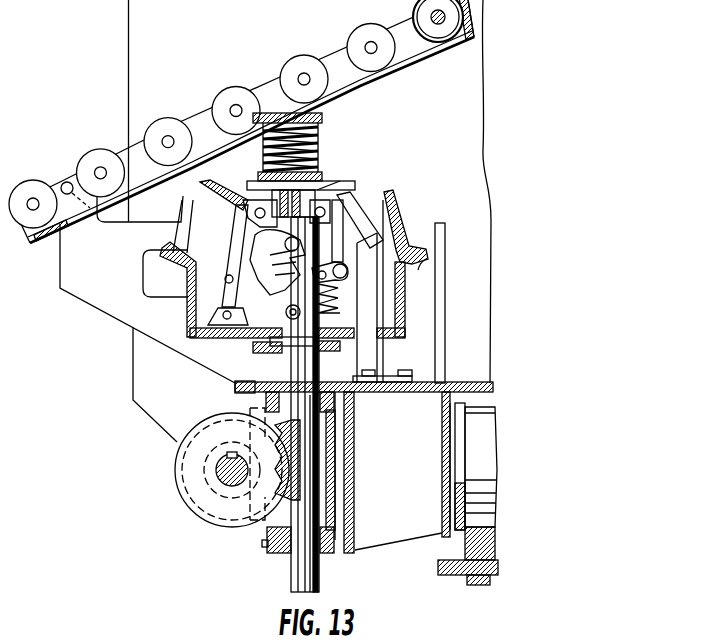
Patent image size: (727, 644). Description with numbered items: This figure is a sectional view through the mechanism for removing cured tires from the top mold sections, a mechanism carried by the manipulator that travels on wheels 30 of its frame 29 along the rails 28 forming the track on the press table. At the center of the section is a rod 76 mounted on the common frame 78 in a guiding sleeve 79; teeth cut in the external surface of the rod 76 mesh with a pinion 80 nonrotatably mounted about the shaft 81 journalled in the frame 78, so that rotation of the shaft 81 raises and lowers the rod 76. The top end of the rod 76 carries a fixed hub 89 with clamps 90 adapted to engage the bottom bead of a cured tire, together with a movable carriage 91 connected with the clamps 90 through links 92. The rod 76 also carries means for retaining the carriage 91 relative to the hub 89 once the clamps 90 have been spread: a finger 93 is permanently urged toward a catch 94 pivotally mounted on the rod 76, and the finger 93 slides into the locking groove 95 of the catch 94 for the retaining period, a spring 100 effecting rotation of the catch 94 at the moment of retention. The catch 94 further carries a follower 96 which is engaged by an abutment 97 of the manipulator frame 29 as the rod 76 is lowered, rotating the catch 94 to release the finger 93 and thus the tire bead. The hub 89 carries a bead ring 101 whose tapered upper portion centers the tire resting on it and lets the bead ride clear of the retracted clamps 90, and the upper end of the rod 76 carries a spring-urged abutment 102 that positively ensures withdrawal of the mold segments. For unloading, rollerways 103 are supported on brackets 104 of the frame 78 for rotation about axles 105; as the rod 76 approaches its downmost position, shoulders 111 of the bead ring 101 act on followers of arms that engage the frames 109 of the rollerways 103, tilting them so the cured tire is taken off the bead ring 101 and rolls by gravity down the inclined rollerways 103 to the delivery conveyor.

The rails 28 is at (499, 543).
The frame 29 is at (136, 44).
The wheels 30 is at (481, 469).
The rod 76 is at (320, 570).
The frame 78 is at (356, 488).
The guiding sleeves 79 is at (341, 406).
The pinion 80 is at (211, 404).
The shaft 81 is at (220, 472).
The hub 89 is at (233, 338).
The clamps 90 is at (201, 189).
The carriage 91 is at (340, 181).
The links 92 is at (232, 262).
The finger 93 is at (275, 235).
The catch 94 is at (257, 302).
The locking groove 95 is at (280, 252).
The follower 96 is at (348, 282).
The abutment 97 is at (408, 238).
The spring 100 is at (353, 308).
The bead ring 101 is at (156, 284).
The spring-urged abutment 102 is at (323, 118).
The rollerways 103 is at (99, 153).
The brackets 104 is at (62, 271).
The axles 105 is at (65, 182).
The frames 109 is at (483, 46).
The shoulders 111 is at (414, 270).